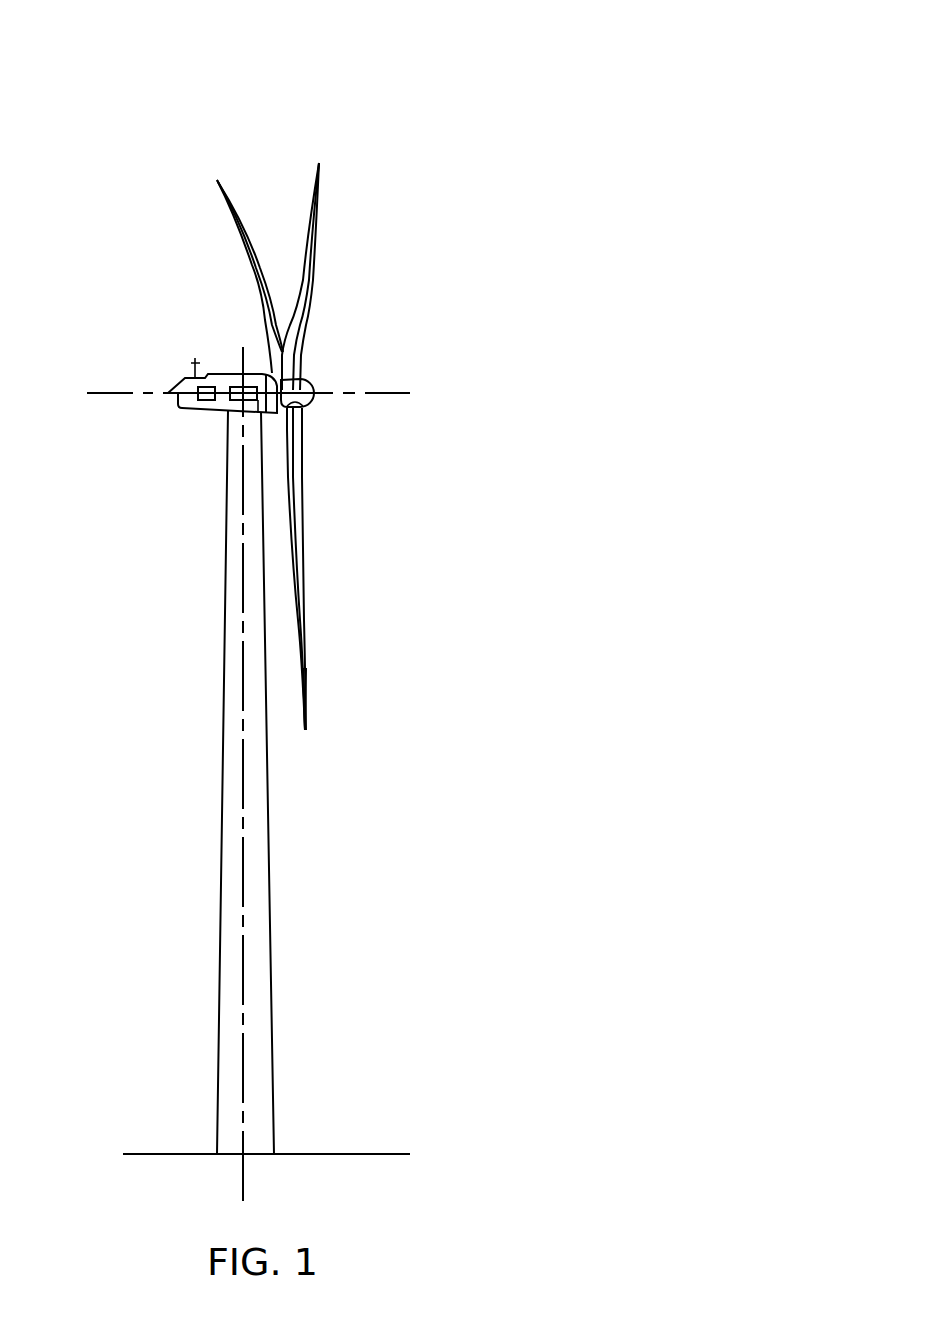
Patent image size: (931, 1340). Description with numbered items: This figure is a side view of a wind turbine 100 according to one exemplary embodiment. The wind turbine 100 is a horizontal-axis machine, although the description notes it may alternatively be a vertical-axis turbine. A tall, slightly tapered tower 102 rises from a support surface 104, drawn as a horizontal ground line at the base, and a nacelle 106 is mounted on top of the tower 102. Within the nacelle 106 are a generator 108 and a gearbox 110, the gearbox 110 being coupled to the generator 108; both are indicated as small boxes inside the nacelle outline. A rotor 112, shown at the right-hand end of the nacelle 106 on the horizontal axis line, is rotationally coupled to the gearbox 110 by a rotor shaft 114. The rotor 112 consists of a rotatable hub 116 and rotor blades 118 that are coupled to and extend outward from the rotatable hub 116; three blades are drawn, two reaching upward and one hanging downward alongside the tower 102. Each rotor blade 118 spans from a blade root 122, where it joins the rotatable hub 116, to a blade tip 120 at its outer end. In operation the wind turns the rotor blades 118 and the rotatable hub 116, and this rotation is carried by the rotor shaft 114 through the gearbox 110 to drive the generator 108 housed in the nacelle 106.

The wind turbine 100 is at (485, 55).
The tower 102 is at (220, 898).
The support surface 104 is at (170, 1154).
The nacelle 106 is at (190, 410).
The generator 108 is at (198, 390).
The gearbox 110 is at (233, 386).
The rotor 112 is at (325, 365).
The rotor shaft 114 is at (262, 398).
The rotatable hub 116 is at (315, 400).
The rotor blade 118 is at (233, 236).
The blade tip 120 is at (306, 729).
The blade root 122 is at (305, 437).